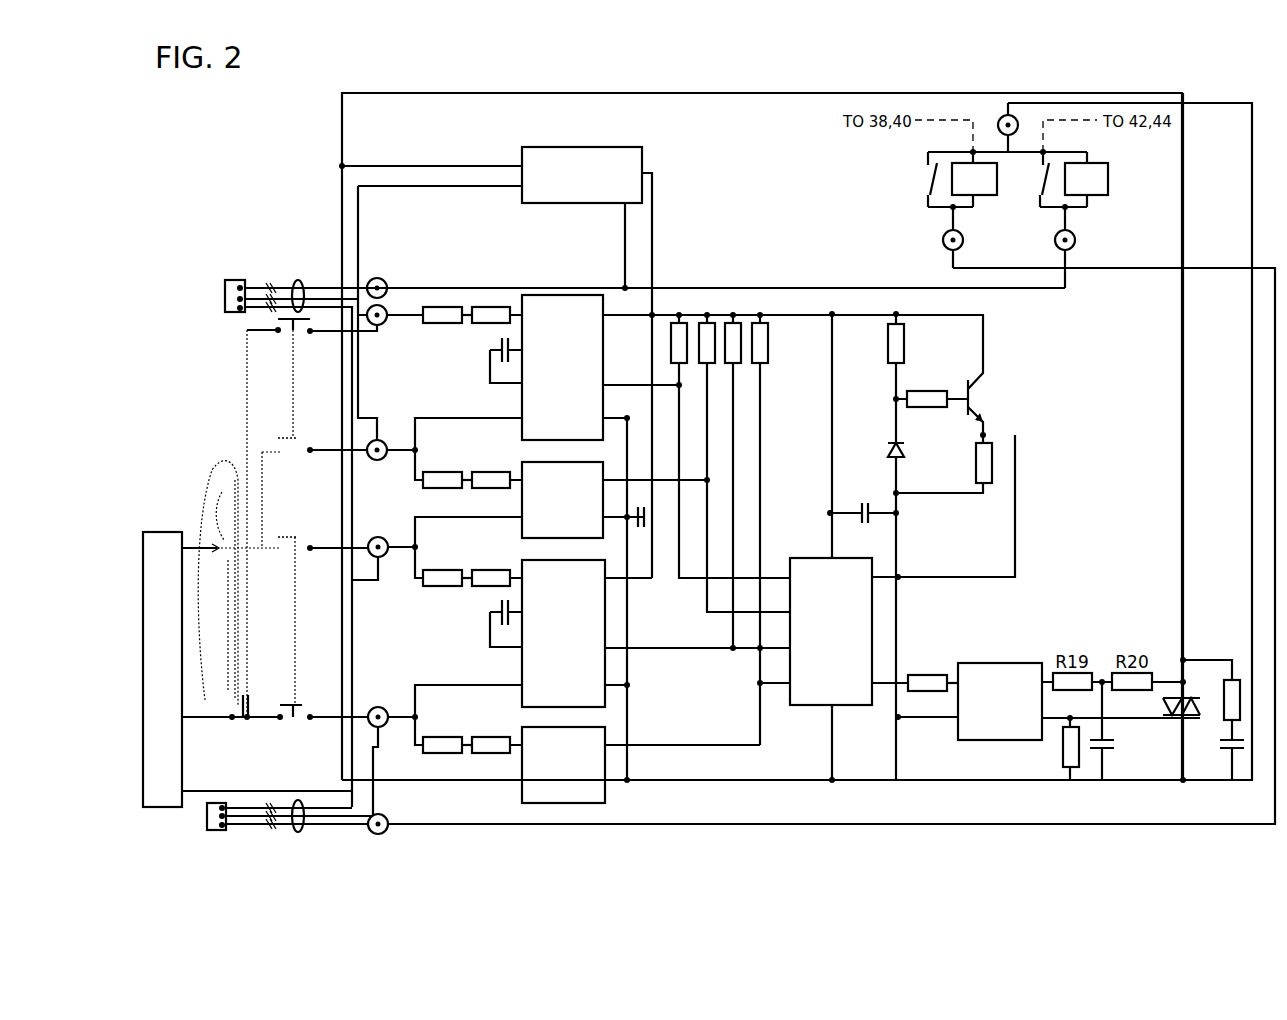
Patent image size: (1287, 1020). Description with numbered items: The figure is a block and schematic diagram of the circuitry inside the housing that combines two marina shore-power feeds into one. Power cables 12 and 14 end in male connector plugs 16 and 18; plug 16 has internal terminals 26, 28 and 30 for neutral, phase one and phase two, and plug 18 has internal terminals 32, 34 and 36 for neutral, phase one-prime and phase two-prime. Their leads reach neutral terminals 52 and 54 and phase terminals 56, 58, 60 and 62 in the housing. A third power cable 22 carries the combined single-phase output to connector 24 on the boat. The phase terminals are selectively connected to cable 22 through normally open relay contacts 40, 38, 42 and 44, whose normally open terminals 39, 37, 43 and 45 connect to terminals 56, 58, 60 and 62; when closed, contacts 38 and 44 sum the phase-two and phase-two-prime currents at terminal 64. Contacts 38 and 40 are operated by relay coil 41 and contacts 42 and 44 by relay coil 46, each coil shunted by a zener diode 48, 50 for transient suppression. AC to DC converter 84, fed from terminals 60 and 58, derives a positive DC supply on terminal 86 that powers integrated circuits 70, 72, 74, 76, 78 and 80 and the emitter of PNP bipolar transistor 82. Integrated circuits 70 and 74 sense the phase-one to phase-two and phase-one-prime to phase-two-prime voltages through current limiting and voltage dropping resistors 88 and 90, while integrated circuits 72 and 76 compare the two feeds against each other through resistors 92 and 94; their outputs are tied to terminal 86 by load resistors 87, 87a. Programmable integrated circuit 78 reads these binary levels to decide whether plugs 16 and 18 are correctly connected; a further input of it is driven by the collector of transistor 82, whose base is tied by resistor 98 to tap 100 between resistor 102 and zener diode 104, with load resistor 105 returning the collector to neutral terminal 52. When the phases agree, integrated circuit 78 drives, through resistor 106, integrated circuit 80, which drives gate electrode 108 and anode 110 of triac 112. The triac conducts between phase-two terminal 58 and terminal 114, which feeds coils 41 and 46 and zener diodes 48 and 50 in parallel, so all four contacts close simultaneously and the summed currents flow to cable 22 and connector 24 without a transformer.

The power cable 12 is at (298, 280).
The power cable 14 is at (299, 800).
The male connector plug 16 is at (225, 282).
The male connector plug 18 is at (212, 803).
The power cable 22 is at (206, 480).
The connector 24 is at (152, 801).
The internal terminal 26 is at (240, 286).
The internal terminal 28 is at (238, 310).
The internal terminal 30 is at (237, 300).
The internal terminal 32 is at (226, 826).
The internal terminal 34 is at (207, 809).
The internal terminal 36 is at (207, 829).
The normally open terminal 37 is at (310, 332).
The relay contact 38 is at (290, 332).
The normally open terminal 39 is at (310, 451).
The relay contact 40 is at (297, 438).
The relay coil 41 is at (985, 197).
The relay contact 42 is at (297, 537).
The normally open terminal 43 is at (310, 549).
The relay contact 44 is at (298, 706).
The normally open terminal 45 is at (310, 718).
The relay coil 46 is at (1108, 185).
The zener diode 48 is at (926, 195).
The zener diode 50 is at (1042, 197).
The neutral terminal 52 is at (381, 279).
The neutral terminal 54 is at (383, 816).
The phase one terminal 56 is at (380, 440).
The phase two terminal 58 is at (383, 326).
The phase one-prime terminal 60 is at (381, 537).
The phase two-prime terminal 62 is at (381, 707).
The terminal 64 is at (224, 596).
The integrated circuit 70 is at (562, 431).
The integrated circuit 72 is at (555, 531).
The integrated circuit 74 is at (557, 697).
The integrated circuit 76 is at (557, 797).
The integrated circuit 78 is at (810, 706).
The integrated circuit 80 is at (1000, 663).
The bipolar transistor 82 is at (985, 388).
The AC to DC converter 84 is at (635, 147).
The DC power supply terminal 86 is at (652, 173).
The load resistors 87 is at (625, 204).
The pull-up resistors R11-R14 87a is at (683, 366).
The current limiting and voltage dropping resistors 88 is at (466, 324).
The current limiting and voltage dropping resistors 90 is at (470, 586).
The current limiting and voltage dropping resistors 92 is at (476, 472).
The current limiting and voltage dropping resistors 94 is at (478, 753).
The resistor 98 is at (948, 390).
The tap 100 is at (893, 399).
The resistor 102 is at (904, 336).
The zener diode 104 is at (890, 448).
The load resistor 105 is at (986, 484).
The resistor 106 is at (950, 672).
The gate electrode 108 is at (1165, 718).
The anode 110 is at (1178, 697).
The triac 112 is at (1232, 680).
The terminal 114 is at (1186, 781).